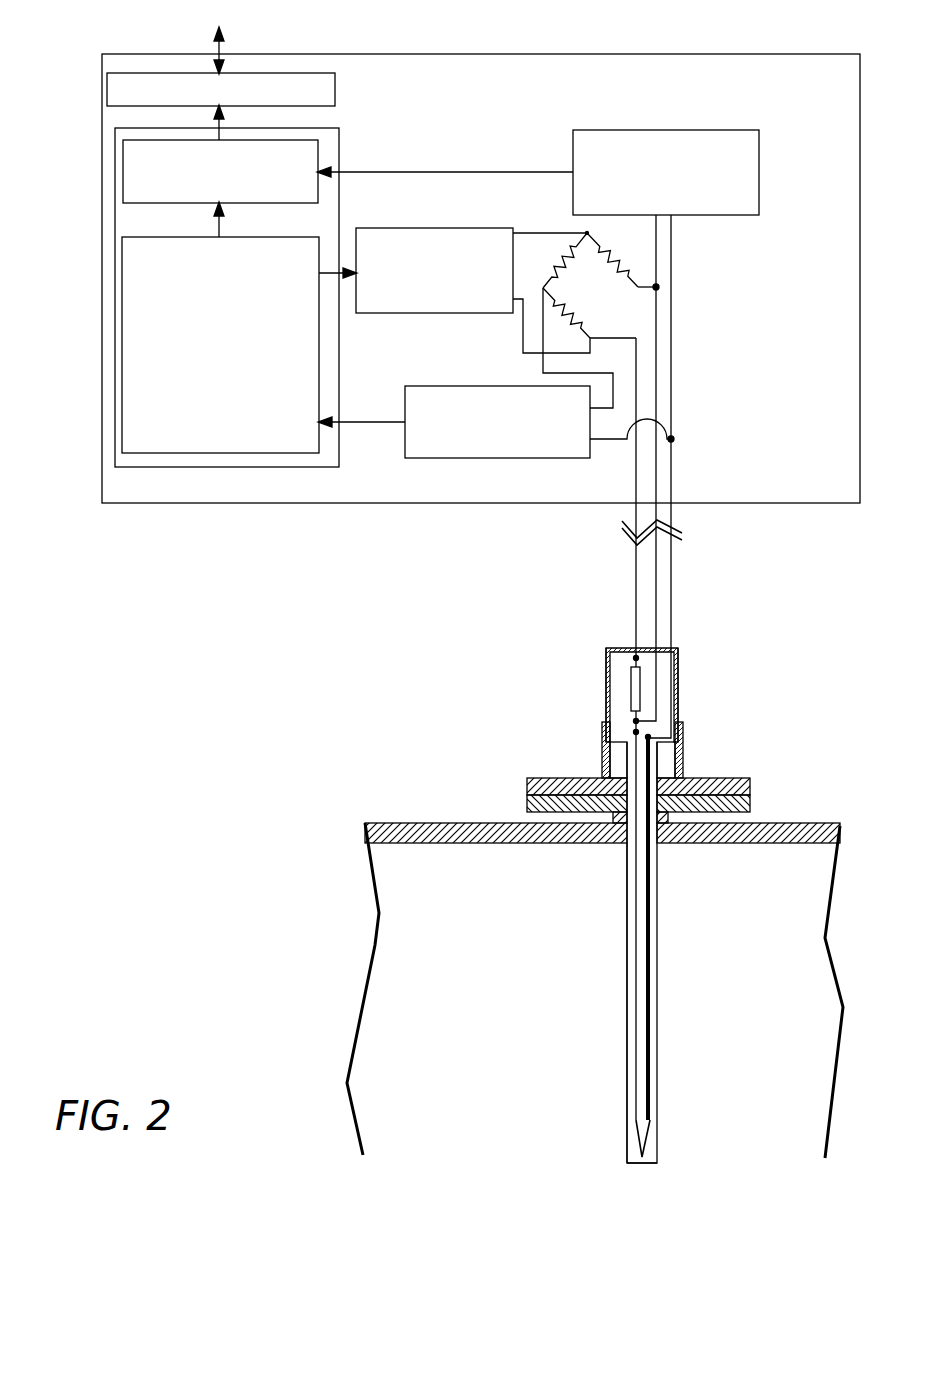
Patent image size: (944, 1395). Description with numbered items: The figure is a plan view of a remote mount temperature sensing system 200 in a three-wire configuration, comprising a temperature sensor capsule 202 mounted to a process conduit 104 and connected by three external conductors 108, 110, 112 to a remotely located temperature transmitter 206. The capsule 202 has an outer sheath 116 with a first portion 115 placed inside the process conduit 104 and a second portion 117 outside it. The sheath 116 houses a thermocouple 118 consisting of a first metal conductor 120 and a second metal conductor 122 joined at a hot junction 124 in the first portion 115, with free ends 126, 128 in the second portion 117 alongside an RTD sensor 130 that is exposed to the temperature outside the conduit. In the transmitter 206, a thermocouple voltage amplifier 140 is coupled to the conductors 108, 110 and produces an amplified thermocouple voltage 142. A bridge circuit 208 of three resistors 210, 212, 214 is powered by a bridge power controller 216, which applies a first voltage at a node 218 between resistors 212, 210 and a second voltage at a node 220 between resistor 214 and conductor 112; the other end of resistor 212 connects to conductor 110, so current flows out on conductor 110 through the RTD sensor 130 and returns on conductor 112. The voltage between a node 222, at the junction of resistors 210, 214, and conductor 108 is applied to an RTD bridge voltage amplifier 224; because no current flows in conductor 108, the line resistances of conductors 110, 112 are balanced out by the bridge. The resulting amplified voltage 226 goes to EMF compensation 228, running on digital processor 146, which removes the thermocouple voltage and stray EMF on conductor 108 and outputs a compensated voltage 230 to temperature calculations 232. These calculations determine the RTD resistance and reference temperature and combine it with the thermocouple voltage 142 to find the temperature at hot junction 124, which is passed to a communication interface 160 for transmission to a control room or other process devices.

The process conduit 104 is at (435, 822).
The external conductor 108 is at (671, 599).
The external conductor 110 is at (656, 568).
The external conductor 112 is at (636, 608).
The first portion 115 is at (627, 948).
The outer sheath 116 is at (606, 693).
The second portion 117 is at (678, 700).
The thermocouple 118 is at (612, 988).
The first metal conductor 120 is at (657, 923).
The second metal conductor 122 is at (633, 1017).
The hot junction 124 is at (657, 1160).
The free end 126 is at (651, 738).
The free end 128 is at (633, 733).
The RTD sensor 130 is at (630, 683).
The thermocouple voltage amplifier 140 is at (759, 175).
The amplified thermocouple voltage 142 is at (475, 172).
The digital processor 146 is at (115, 172).
The communication interface 160 is at (335, 91).
The temperature sensing system 200 is at (254, 660).
The temperature sensor capsule 202 is at (690, 676).
The temperature transmitter 206 is at (481, 278).
The bridge circuit 208 is at (537, 231).
The resistor 210 is at (562, 243).
The resistor 212 is at (622, 281).
The resistor 214 is at (571, 321).
The bridge power controller 216 is at (400, 228).
The node 218 is at (589, 236).
The node 220 is at (590, 340).
The node 222 is at (543, 287).
The RTD bridge voltage amplifier 224 is at (572, 458).
The amplified voltage 226 is at (372, 421).
The EMF compensation 228 is at (220, 345).
The compensated voltage 230 is at (219, 231).
The temperature calculations 232 is at (318, 151).